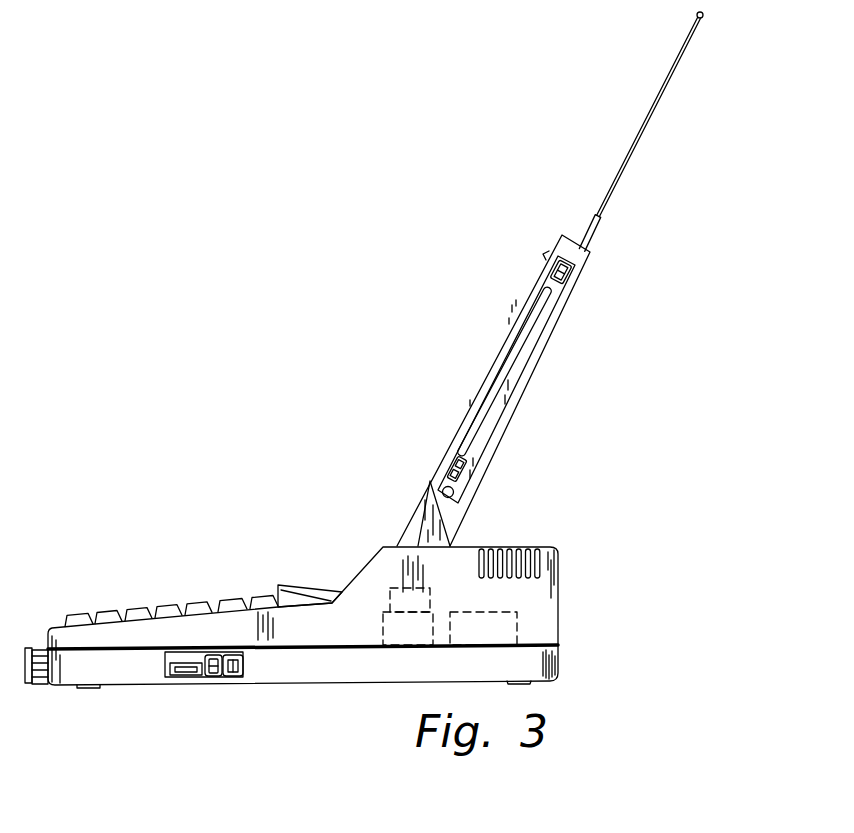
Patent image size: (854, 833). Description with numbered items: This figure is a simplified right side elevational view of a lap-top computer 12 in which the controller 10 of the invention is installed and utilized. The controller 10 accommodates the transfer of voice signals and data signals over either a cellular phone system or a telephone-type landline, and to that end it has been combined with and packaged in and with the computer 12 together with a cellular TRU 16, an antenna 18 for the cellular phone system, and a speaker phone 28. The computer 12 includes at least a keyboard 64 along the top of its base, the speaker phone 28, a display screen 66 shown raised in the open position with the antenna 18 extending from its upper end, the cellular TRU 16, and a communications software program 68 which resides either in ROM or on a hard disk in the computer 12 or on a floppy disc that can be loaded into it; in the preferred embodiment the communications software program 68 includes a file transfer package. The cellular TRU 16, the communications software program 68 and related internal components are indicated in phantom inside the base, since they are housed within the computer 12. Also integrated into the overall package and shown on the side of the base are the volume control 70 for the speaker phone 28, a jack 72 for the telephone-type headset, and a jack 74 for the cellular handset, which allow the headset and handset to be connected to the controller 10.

The controller 10 is at (383, 628).
The computer 12 is at (213, 494).
The cellular TRU 16 is at (517, 608).
The antenna 18 is at (641, 130).
The speaker phone 28 is at (297, 587).
The keyboard 64 is at (158, 607).
The display screen 66 is at (497, 352).
The communications software program 68 is at (425, 585).
The volume control 70 is at (185, 673).
The jack 72 is at (213, 677).
The jack 74 is at (233, 677).